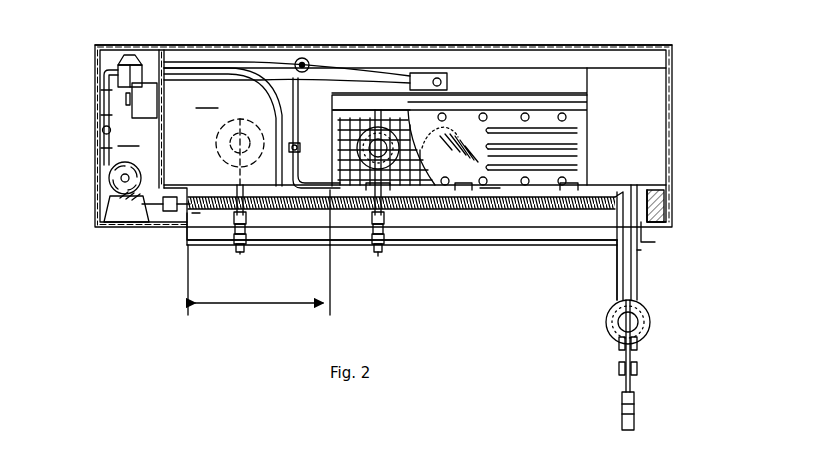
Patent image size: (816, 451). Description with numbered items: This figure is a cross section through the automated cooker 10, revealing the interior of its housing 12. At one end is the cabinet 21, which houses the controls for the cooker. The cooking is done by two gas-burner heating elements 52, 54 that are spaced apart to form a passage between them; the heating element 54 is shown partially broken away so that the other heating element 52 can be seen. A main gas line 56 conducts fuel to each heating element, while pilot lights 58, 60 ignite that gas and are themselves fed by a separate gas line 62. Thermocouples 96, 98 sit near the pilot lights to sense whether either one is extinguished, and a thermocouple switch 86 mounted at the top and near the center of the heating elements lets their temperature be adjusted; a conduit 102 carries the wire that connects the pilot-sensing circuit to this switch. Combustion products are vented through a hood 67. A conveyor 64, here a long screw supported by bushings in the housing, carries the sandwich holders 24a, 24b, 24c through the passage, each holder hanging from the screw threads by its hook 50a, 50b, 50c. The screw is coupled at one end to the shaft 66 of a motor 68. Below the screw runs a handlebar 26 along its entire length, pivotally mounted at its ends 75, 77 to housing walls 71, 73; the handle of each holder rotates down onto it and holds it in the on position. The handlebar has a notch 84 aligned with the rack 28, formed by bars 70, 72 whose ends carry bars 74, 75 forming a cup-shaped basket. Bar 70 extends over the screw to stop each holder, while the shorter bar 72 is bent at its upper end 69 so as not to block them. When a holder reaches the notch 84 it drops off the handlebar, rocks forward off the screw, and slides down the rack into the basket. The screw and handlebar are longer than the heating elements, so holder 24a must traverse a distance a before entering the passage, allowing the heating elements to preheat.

The automated cooker 10 is at (588, 46).
The housing 12 is at (495, 46).
The cabinet 21 is at (129, 110).
The sandwich holder 24a is at (240, 255).
The sandwich holder 24b is at (378, 272).
The sandwich holder 24c is at (620, 396).
The handlebar 26 is at (470, 262).
The rack 28 is at (642, 252).
The hook 50a is at (250, 208).
The hook 50b is at (385, 222).
The hook 50c is at (639, 369).
The heating element 52 is at (450, 143).
The heating element 54 is at (502, 135).
The main gas line 56 is at (290, 62).
The pilot light 58 is at (366, 200).
The pilot light 60 is at (463, 205).
The gas line 62 is at (300, 58).
The conveyor 64 is at (440, 300).
The shaft 66 is at (182, 196).
The hood 67 is at (223, 127).
The motor 68 is at (112, 184).
The upper end of bar 72 69 is at (600, 200).
The bar 70 is at (637, 286).
The housing wall 71 is at (175, 200).
The bar 72 is at (617, 290).
The wall 73 is at (668, 205).
The bar 74 is at (606, 336).
The bar 75 is at (187, 224).
The handlebar end 77 is at (648, 234).
The notch 84 is at (617, 242).
The thermocouple switch 86 is at (438, 73).
The thermocouple 96 is at (373, 220).
The thermocouple 98 is at (490, 205).
The conduit 102 is at (388, 76).